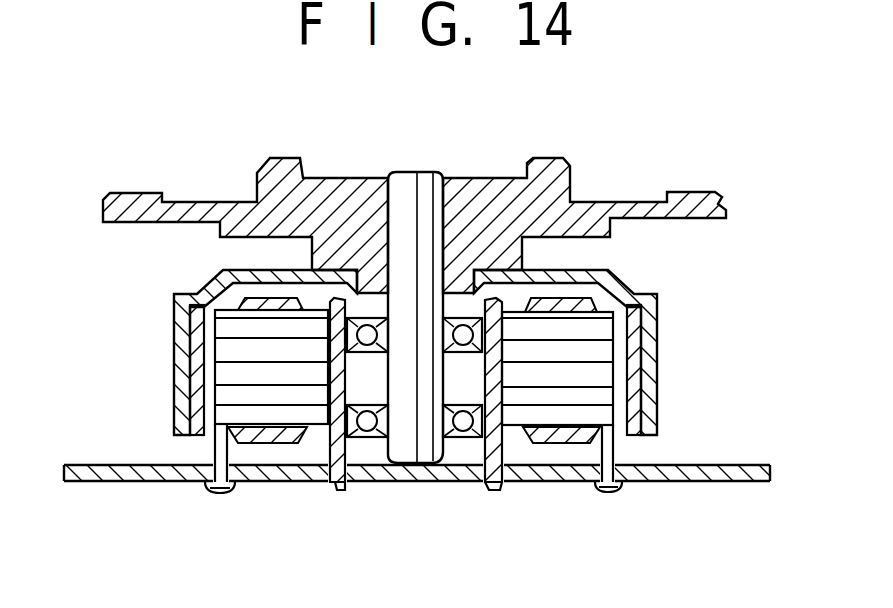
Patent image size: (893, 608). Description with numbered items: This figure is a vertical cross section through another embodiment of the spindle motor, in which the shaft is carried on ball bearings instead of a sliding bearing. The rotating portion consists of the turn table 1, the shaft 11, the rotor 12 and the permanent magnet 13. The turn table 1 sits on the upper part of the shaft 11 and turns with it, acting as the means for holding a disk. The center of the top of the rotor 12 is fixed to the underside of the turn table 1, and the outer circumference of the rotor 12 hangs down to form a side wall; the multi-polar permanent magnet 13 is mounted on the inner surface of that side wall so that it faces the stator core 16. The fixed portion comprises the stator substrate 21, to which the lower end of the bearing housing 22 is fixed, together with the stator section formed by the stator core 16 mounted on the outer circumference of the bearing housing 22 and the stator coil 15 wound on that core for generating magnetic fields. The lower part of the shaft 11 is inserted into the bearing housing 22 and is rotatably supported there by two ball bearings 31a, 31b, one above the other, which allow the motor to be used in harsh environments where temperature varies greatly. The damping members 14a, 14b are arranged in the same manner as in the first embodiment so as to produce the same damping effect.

The turn table 1 is at (262, 174).
The shaft 11 is at (428, 176).
The rotor 12 is at (633, 288).
The permanent magnet 13 is at (637, 350).
The stator core 16 is at (587, 397).
The stator coil 15 is at (288, 438).
The bearing housing 22 is at (493, 448).
The ball bearing 31a is at (350, 332).
The ball bearing 31b is at (350, 416).
The stator substrate 21 is at (113, 478).
The damping member 14a is at (217, 493).
The damping member 14b is at (612, 491).